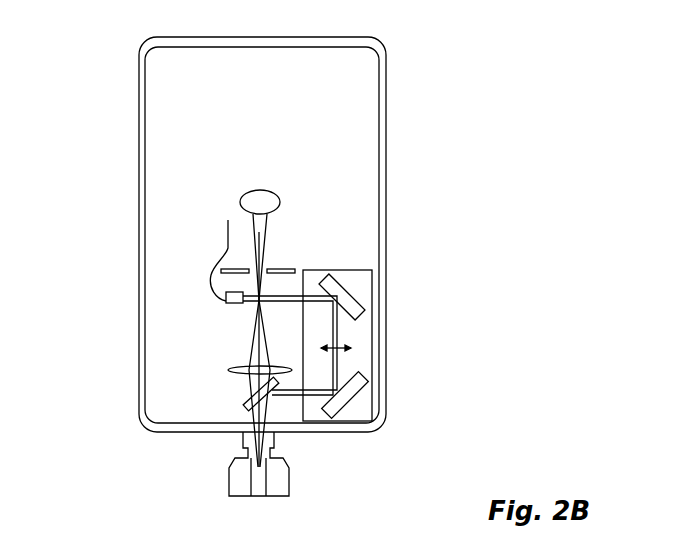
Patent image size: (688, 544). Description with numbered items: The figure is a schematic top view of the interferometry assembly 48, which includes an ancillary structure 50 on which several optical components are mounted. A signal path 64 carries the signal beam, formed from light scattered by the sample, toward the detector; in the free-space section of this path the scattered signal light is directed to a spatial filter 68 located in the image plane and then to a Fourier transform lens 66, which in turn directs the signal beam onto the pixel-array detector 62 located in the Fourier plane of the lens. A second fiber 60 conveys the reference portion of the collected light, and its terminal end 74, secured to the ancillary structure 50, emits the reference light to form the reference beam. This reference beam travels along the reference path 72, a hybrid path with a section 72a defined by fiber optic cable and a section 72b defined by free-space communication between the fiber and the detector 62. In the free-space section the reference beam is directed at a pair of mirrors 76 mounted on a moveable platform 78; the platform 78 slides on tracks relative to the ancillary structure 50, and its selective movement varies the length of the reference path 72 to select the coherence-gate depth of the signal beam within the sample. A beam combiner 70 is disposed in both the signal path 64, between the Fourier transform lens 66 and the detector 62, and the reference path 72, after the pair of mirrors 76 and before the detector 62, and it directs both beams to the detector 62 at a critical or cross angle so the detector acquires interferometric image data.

The interferometry assembly 48 is at (88, 258).
The ancillary structure 50 is at (139, 127).
The second fiber 60 is at (228, 248).
The pixel-array detector 62 is at (229, 474).
The signal path 64 is at (268, 230).
The Fourier transform lens 66 is at (228, 370).
The spatial filter 68 is at (286, 269).
The beam combiner 70 is at (247, 400).
The reference path 72 is at (278, 303).
The section of reference path defined by fiber optic cable 72a is at (228, 222).
The section of reference path defined by free space communication 72b is at (284, 395).
The terminal end 74 is at (226, 303).
The pair of mirrors 76 is at (364, 288).
The moveable platform 78 is at (351, 348).